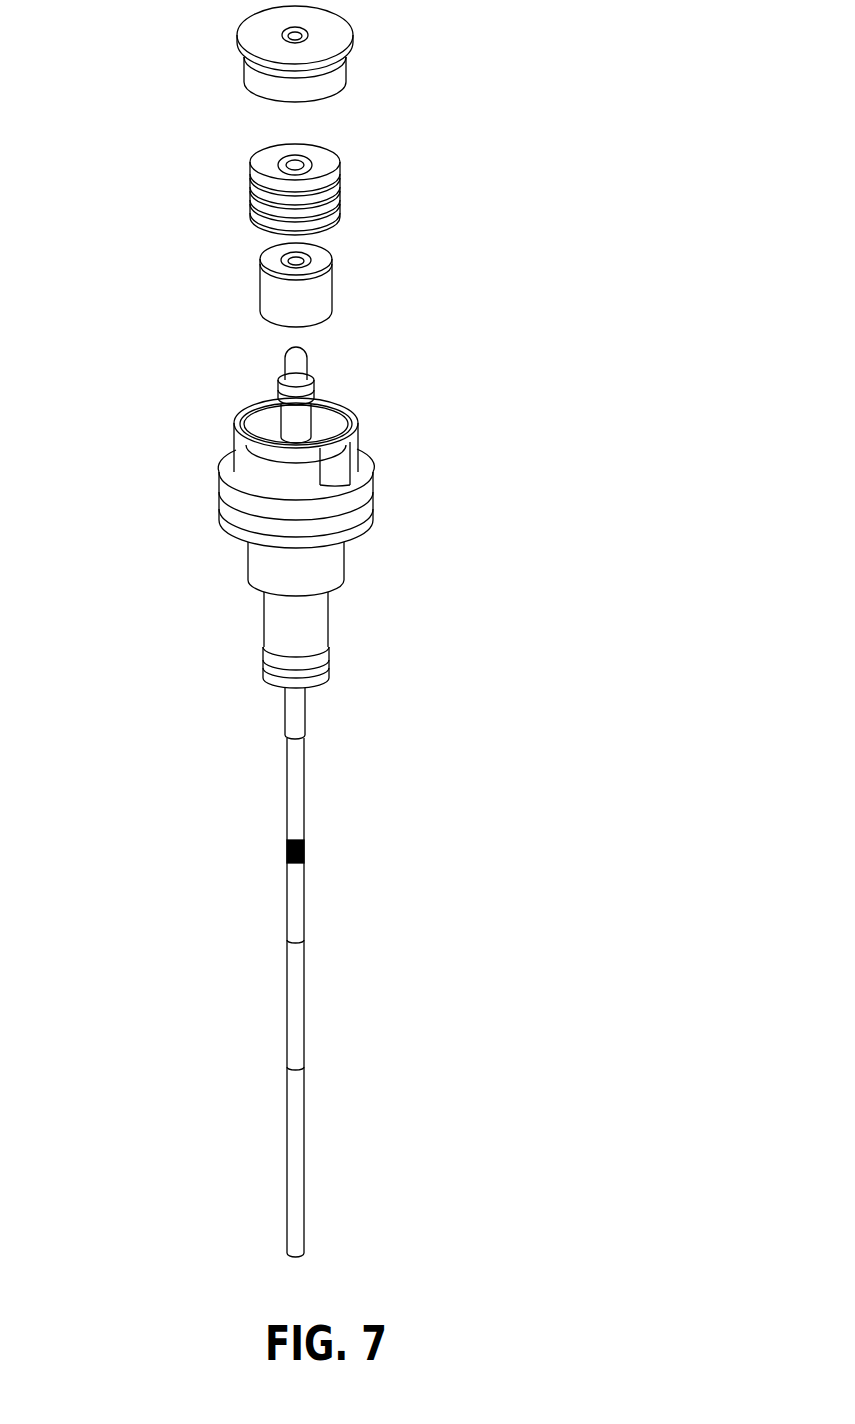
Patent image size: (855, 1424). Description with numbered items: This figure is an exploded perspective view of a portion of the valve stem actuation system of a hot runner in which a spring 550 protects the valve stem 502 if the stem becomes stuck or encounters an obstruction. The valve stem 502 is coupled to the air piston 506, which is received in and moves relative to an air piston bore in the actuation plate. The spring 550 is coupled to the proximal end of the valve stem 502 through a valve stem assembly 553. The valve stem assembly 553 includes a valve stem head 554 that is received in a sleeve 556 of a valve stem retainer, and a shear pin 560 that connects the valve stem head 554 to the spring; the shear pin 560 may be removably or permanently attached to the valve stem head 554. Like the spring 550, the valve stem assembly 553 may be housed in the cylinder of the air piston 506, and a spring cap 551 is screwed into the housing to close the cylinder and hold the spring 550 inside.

The valve stem assembly 553 is at (188, 360).
The spring cap 551 is at (335, 40).
The spring 550 is at (340, 193).
The sleeve 556 is at (313, 293).
The shear pin 560 is at (297, 368).
The valve stem head 554 is at (300, 420).
The air piston 506 is at (367, 505).
The valve stem 502 is at (295, 893).